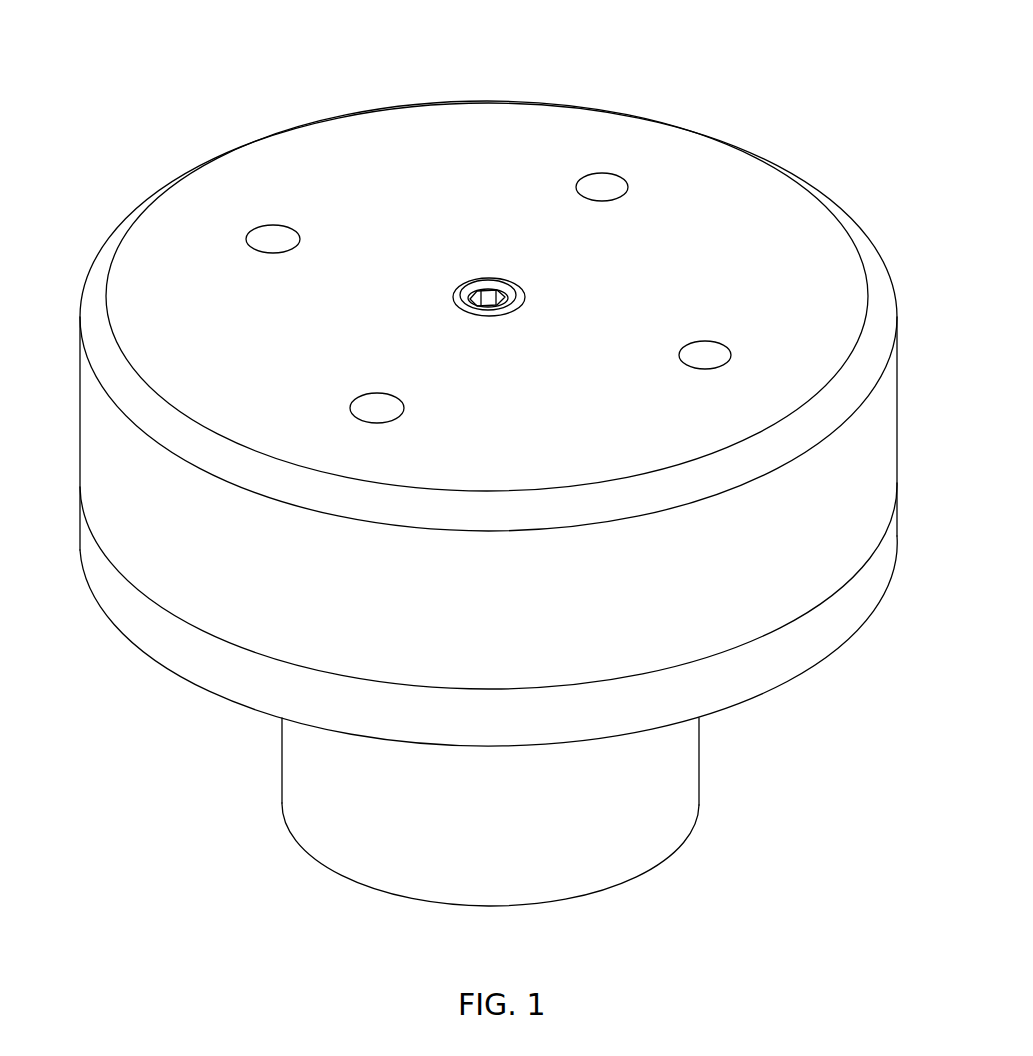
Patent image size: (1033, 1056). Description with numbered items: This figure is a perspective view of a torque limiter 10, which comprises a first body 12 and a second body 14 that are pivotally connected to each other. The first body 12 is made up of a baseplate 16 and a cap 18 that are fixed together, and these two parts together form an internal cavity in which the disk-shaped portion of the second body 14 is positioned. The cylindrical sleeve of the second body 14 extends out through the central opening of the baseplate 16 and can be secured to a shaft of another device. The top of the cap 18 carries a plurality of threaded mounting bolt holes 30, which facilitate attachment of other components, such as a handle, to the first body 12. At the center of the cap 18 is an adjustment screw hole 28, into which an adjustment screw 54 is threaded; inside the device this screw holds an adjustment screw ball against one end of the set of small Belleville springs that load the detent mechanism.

The torque limiter 10 is at (178, 74).
The first body 12 is at (715, 233).
The second body 14 is at (374, 852).
The baseplate 16 is at (168, 644).
The cap 18 is at (473, 180).
The adjustment screw hole 28 is at (494, 296).
The adjustment screw 54 is at (494, 296).
The mounting bolt holes 30 is at (272, 228).